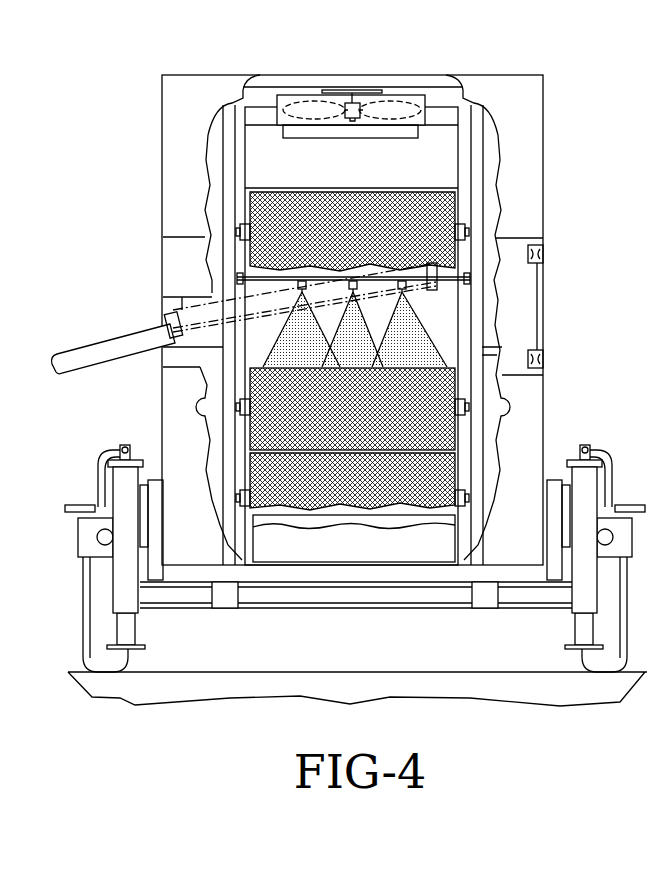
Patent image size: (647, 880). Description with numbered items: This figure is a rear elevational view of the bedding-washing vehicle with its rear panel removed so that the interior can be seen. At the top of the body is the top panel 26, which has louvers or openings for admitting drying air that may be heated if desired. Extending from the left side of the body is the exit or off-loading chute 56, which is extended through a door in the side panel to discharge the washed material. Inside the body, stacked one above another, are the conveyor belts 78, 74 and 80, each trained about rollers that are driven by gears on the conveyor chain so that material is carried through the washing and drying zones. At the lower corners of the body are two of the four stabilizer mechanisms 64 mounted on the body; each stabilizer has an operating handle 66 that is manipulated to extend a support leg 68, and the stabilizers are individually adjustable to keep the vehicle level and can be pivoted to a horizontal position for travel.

The top panel 26 is at (337, 75).
The off-loading chute 56 is at (108, 349).
The stabilizer mechanism 64 is at (118, 582).
The operating handle 66 is at (103, 492).
The support leg 68 is at (127, 622).
The conveyor belt 74 is at (265, 390).
The conveyor belt 78 is at (265, 208).
The conveyor belt 80 is at (302, 493).